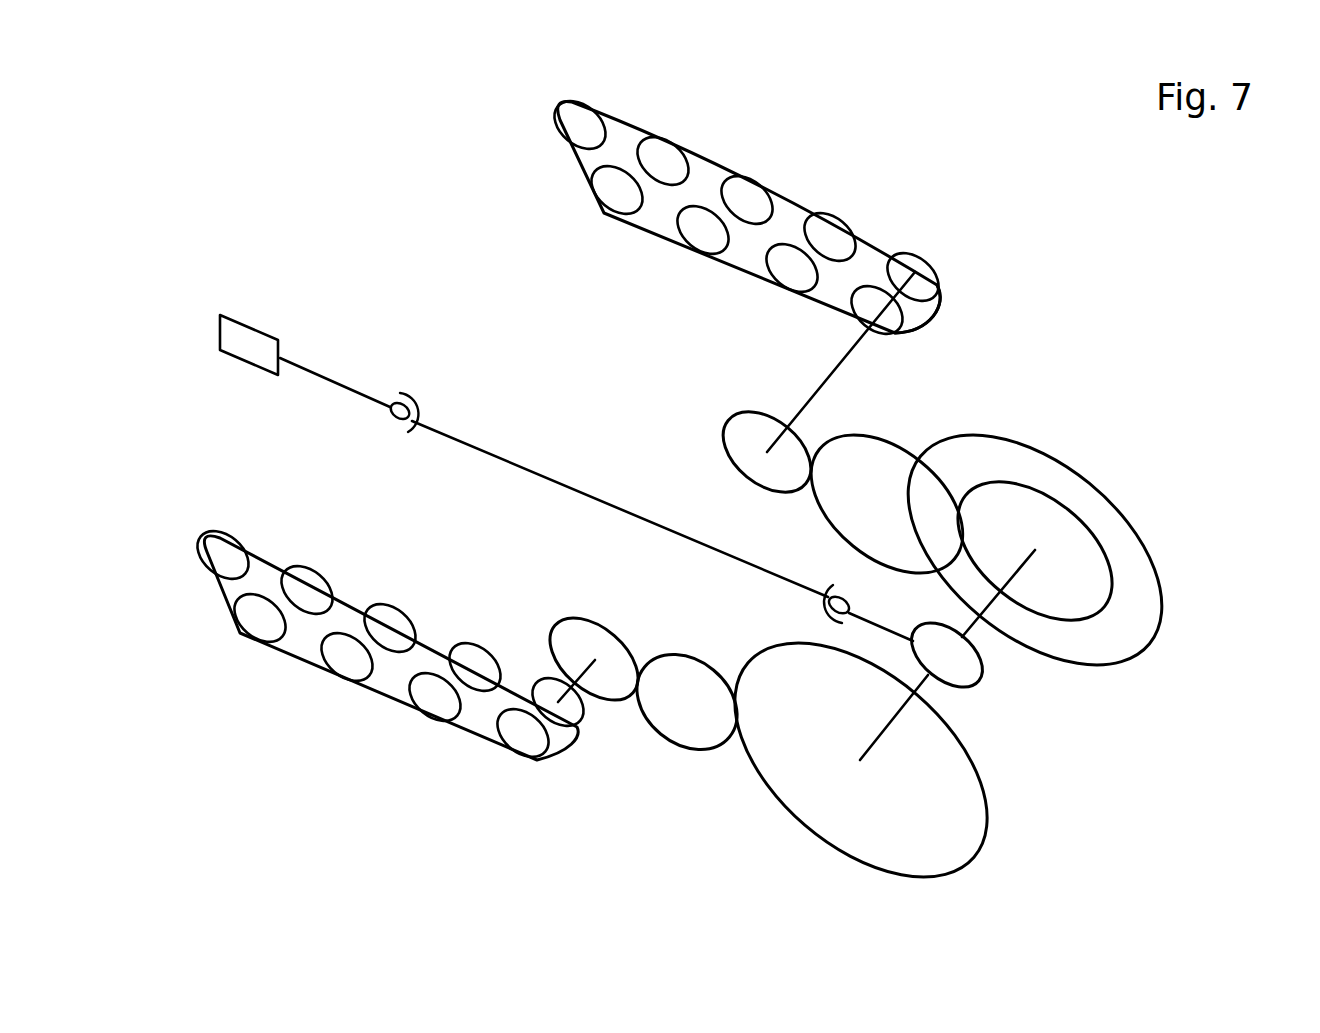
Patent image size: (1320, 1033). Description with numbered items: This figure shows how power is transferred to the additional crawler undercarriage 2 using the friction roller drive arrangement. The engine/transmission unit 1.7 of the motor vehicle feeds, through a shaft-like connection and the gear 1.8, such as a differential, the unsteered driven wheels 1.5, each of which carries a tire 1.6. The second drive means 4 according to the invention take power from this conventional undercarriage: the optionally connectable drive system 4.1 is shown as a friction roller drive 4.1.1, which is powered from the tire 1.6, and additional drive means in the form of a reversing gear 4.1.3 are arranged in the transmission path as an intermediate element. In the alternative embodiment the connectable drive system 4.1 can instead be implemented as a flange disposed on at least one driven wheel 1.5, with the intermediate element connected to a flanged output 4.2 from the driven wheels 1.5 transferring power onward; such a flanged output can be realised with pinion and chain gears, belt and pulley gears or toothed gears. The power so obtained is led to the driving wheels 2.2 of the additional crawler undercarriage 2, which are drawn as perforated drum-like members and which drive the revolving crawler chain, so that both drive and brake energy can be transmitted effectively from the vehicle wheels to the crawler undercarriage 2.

The additional crawler undercarriage 2 is at (556, 171).
The driving wheels 2.2 is at (937, 292).
The second drive means 4 is at (797, 388).
The connectable drive system 4.1 is at (700, 442).
The flanged output 4.2 is at (898, 420).
The friction roller drive 4.1.1 is at (620, 755).
The reversing gear 4.1.3 is at (687, 685).
The driven wheels 1.5 is at (963, 810).
The tires 1.6 is at (1116, 626).
The engine/transmission unit 1.7 is at (247, 333).
The gear 1.8 is at (988, 677).